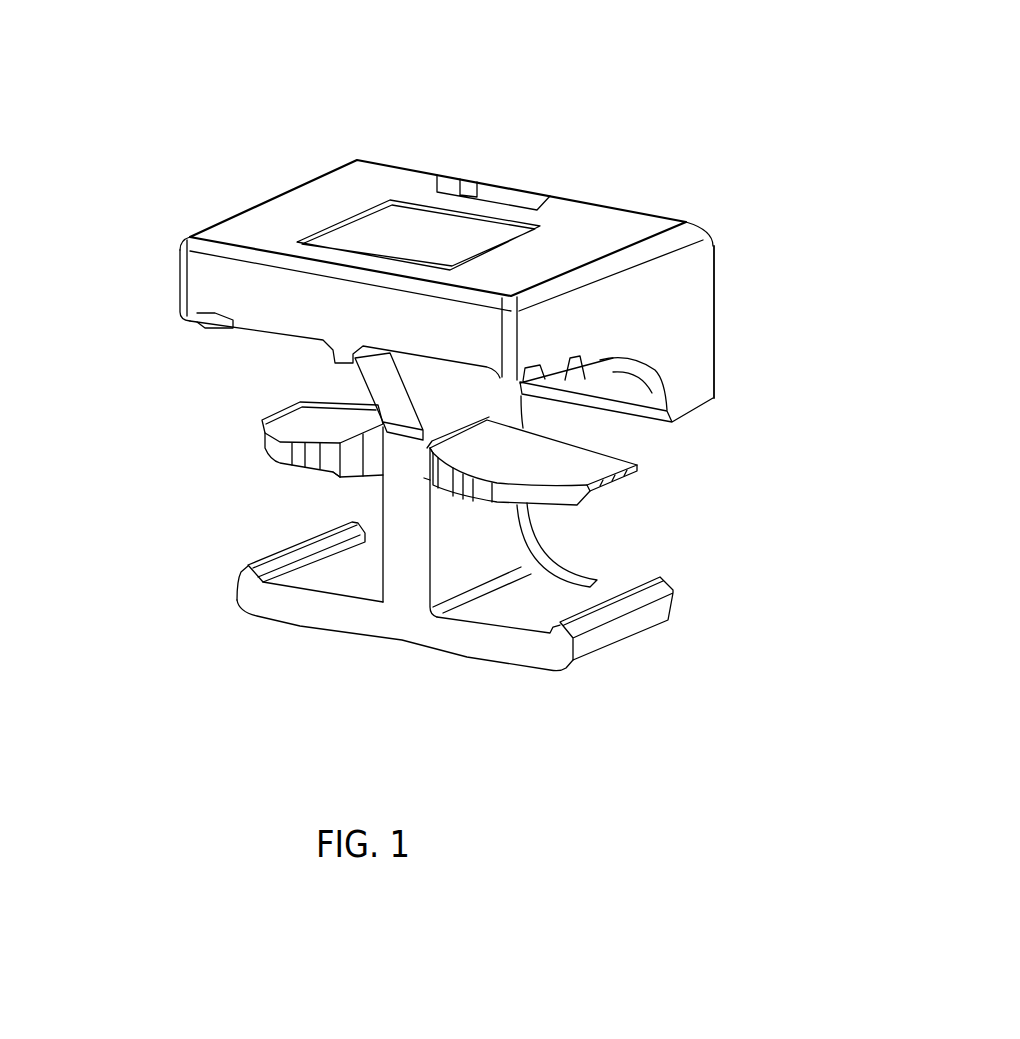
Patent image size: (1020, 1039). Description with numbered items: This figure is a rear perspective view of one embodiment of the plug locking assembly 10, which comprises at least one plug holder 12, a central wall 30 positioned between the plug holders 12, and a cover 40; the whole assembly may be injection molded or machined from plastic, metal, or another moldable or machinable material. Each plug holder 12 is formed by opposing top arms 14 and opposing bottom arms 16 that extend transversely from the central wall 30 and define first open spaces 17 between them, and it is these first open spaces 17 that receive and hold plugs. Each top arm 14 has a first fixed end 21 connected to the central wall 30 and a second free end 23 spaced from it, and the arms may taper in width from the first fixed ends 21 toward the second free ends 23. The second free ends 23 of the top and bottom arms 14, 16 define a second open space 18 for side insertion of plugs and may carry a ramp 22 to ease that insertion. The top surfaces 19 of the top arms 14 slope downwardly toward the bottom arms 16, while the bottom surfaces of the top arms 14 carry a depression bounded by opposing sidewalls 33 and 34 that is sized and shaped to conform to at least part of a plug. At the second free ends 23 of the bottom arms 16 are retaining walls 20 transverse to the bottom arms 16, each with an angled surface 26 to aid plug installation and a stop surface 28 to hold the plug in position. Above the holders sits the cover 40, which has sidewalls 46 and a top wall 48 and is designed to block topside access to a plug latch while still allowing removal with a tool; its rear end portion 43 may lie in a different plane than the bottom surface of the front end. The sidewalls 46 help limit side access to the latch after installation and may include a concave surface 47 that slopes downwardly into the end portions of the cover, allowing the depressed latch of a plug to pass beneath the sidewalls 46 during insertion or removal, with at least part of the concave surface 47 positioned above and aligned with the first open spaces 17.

The plug locking assembly 10 is at (427, 144).
The plug holder 12 is at (218, 585).
The top arm 14 is at (640, 440).
The bottom arm 16 is at (513, 680).
The first open space 17 is at (305, 509).
The second open space 18 is at (650, 540).
The top surface 19 is at (573, 463).
The retaining wall 20 is at (238, 620).
The first fixed end 21 is at (427, 455).
The ramp 22 is at (587, 488).
The second free end 23 is at (290, 403).
The angled surface 26 is at (607, 612).
The stop surface 28 is at (302, 566).
The central wall 30 is at (503, 543).
The sidewall of depression 33 is at (282, 466).
The sidewall of depression 34 is at (330, 473).
The cover 40 is at (578, 224).
The rear end portion 43 is at (242, 283).
The sidewall 46 is at (655, 280).
The concave surface 47 is at (703, 383).
The top wall 48 is at (270, 212).